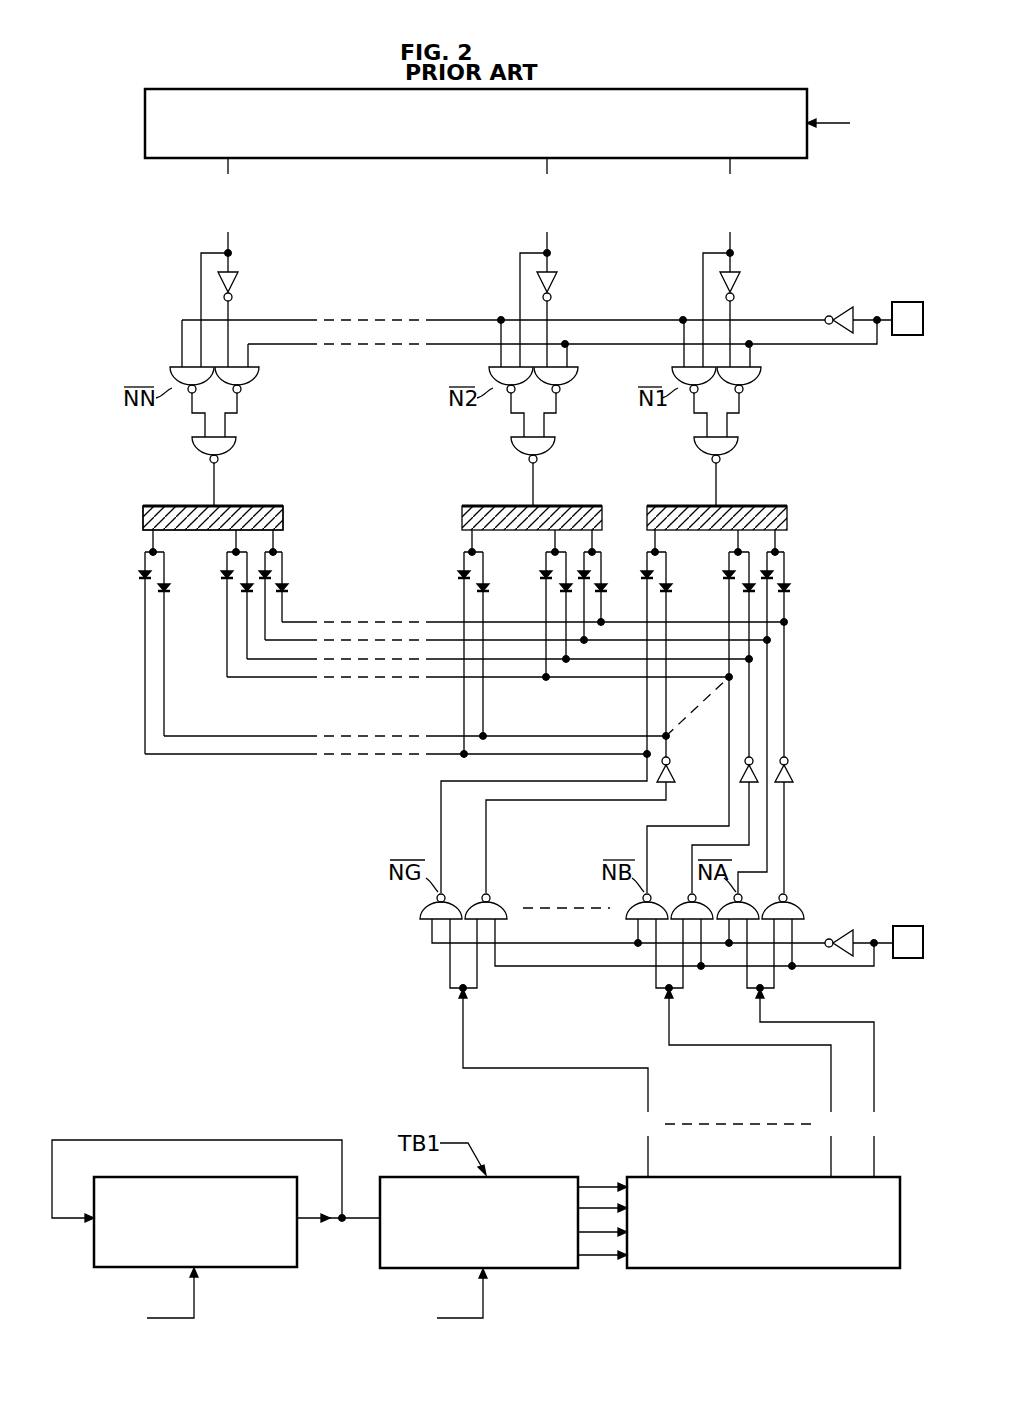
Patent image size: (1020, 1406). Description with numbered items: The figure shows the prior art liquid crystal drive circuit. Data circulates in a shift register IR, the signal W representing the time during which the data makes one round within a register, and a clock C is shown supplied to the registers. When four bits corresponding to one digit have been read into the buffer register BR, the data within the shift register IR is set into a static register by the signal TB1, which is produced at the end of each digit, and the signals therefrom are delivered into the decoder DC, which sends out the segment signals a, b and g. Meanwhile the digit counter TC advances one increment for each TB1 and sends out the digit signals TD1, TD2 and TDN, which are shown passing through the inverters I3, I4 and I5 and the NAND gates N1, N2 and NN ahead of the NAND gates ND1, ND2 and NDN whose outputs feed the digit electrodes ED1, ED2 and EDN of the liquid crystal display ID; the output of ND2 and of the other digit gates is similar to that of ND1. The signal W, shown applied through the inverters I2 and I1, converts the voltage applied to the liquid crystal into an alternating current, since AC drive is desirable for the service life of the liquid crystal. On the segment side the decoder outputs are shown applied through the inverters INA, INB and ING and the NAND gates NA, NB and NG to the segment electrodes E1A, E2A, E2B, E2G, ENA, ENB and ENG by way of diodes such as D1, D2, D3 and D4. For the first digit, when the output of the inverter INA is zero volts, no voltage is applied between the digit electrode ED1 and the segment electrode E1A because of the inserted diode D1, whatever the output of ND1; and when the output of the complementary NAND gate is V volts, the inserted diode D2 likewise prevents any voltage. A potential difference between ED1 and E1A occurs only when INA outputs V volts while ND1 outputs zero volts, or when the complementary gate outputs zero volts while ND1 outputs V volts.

The digit counter TC is at (301, 89).
The signal TB1 is at (851, 123).
The signal TDN is at (227, 205).
The signal TD2 is at (546, 205).
The signal TD1 is at (729, 205).
The inverter I1 is at (842, 930).
The inverter I2 is at (839, 306).
The inverter I3 is at (751, 310).
The inverter I4 is at (568, 310).
The inverter I5 is at (240, 284).
The signal W is at (907, 630).
The NAND gate NN is at (261, 383).
The NAND gate N2 is at (583, 402).
The NAND gate N1 is at (766, 402).
The NAND gate NDN is at (192, 449).
The NAND gate ND2 is at (500, 471).
The NAND gate ND1 is at (684, 471).
The digit electrode EDN is at (267, 506).
The digit electrode ED2 is at (534, 488).
The digit electrode ED1 is at (720, 488).
The display device ID is at (143, 513).
The segment electrode ENG is at (158, 535).
The segment electrode ENB is at (234, 534).
The segment electrode ENA is at (276, 534).
The segment electrode E2G is at (495, 642).
The segment electrode E2B is at (535, 603).
The segment electrode E2A is at (621, 585).
The segment electrode E1A is at (745, 585).
The diode D1 is at (810, 592).
The diode D2 is at (794, 565).
The diode D3 is at (717, 603).
The diode D4 is at (691, 642).
The inverter ING is at (672, 785).
The inverter INB is at (744, 778).
The inverter INA is at (790, 776).
The NAND gate NG is at (490, 894).
The NAND gate NB is at (686, 890).
The NAND gate NA is at (788, 890).
The segment signal g is at (558, 1086).
The segment signal b is at (753, 1086).
The segment signal a is at (819, 1086).
The shift register IR is at (297, 1247).
The buffer register BR is at (533, 1177).
The decoder DC is at (740, 1268).
The clock signal C is at (306, 1299).